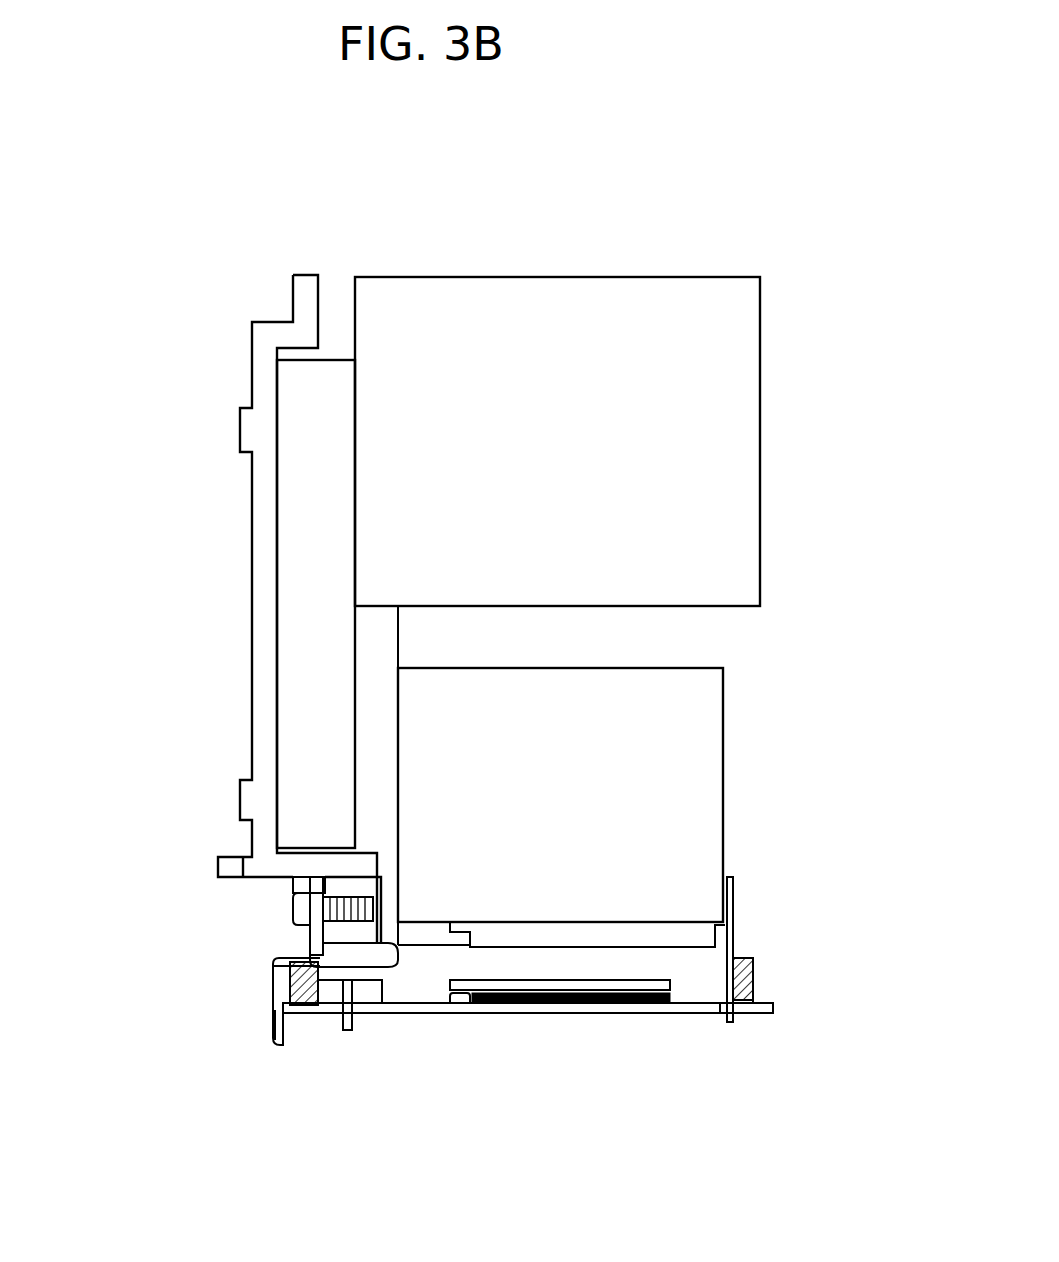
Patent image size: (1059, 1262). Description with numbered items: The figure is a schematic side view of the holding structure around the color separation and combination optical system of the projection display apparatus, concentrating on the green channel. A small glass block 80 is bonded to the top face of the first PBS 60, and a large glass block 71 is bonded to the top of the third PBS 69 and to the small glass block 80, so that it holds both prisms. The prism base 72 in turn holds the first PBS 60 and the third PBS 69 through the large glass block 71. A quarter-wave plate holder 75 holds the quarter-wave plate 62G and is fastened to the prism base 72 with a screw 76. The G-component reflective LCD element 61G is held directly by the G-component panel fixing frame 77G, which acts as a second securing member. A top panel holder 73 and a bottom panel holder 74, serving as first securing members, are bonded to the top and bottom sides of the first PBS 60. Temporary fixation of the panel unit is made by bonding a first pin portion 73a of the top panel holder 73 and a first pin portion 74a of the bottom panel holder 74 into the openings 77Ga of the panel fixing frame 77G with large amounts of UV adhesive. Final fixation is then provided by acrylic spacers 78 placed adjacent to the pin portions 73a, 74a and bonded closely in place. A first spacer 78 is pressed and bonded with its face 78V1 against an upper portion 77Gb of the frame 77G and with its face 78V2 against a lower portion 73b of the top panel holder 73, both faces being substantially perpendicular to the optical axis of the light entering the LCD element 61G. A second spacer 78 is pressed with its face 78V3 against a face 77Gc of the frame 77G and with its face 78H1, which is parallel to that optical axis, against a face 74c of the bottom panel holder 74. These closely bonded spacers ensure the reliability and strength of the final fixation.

The first PBS 60 is at (632, 775).
The G-component reflective LCD element 61G is at (588, 1015).
The image sensor chip 62G is at (546, 945).
The third PBS 69 is at (528, 300).
The large glass block 71 is at (307, 658).
The prism base 72 is at (263, 330).
The top panel holder 73 is at (280, 968).
The first pin portion 73a is at (346, 1040).
The lower portion 73b is at (285, 978).
The bottom panel holder 74 is at (733, 940).
The first pin portion 74a is at (733, 1030).
The face 74c is at (733, 952).
The quarter-wave plate holder 75 is at (310, 947).
The screw 76 is at (295, 908).
The G-component panel fixing frame 77G is at (493, 1005).
The opening 77Ga is at (362, 1015).
The upper portion 77Gb is at (297, 1005).
The face 77Gc is at (760, 1015).
The acrylic spacer 78 is at (285, 994).
The face 78H1 is at (755, 968).
The face 78V1 is at (277, 1032).
The face 78V2 is at (283, 988).
The face 78V3 is at (755, 1005).
The small glass block 80 is at (375, 715).